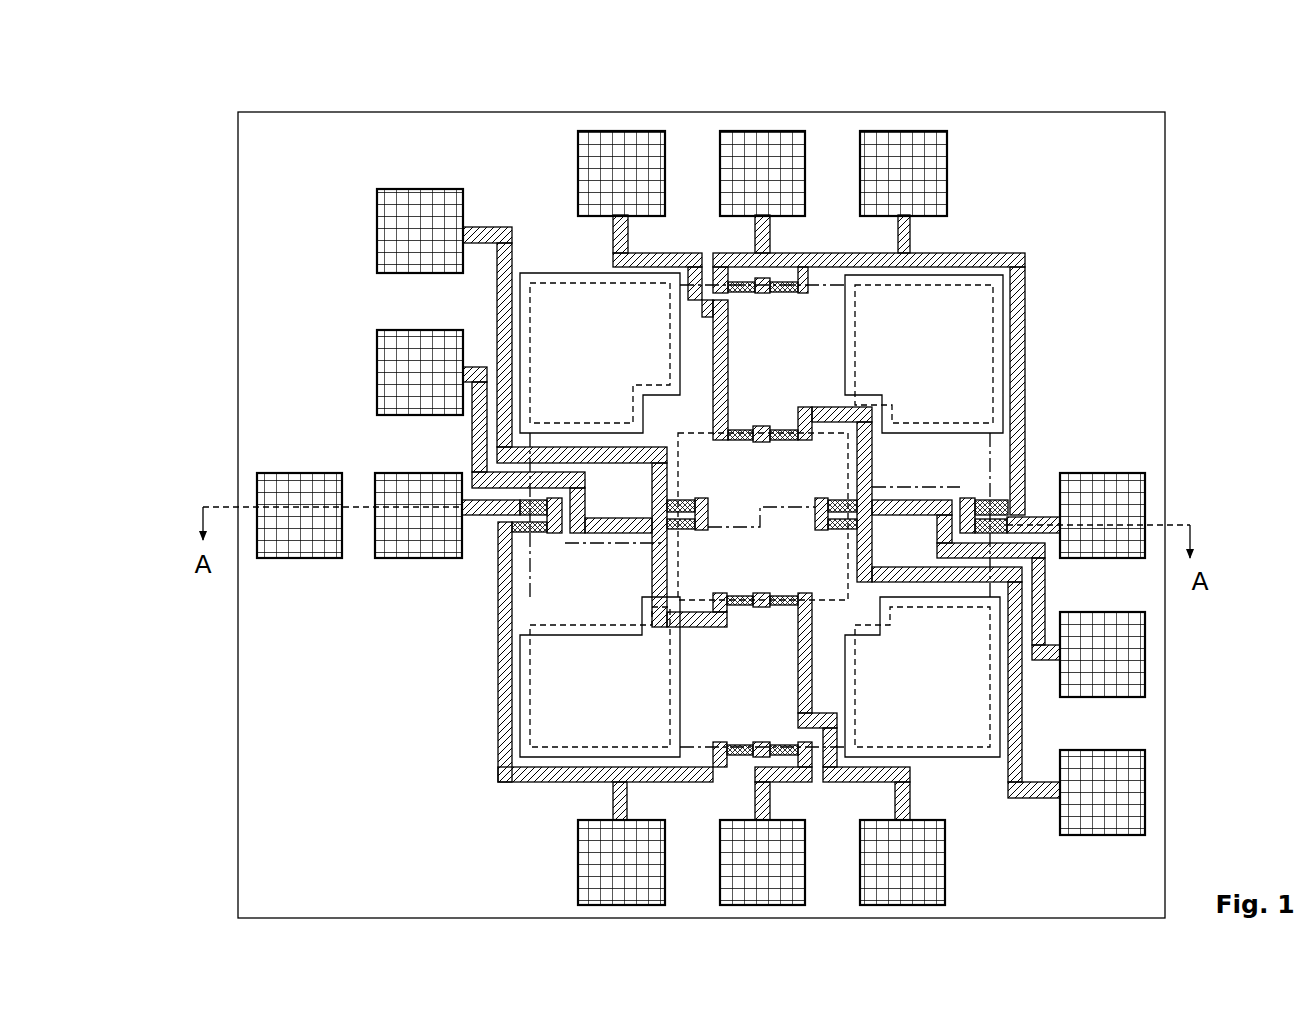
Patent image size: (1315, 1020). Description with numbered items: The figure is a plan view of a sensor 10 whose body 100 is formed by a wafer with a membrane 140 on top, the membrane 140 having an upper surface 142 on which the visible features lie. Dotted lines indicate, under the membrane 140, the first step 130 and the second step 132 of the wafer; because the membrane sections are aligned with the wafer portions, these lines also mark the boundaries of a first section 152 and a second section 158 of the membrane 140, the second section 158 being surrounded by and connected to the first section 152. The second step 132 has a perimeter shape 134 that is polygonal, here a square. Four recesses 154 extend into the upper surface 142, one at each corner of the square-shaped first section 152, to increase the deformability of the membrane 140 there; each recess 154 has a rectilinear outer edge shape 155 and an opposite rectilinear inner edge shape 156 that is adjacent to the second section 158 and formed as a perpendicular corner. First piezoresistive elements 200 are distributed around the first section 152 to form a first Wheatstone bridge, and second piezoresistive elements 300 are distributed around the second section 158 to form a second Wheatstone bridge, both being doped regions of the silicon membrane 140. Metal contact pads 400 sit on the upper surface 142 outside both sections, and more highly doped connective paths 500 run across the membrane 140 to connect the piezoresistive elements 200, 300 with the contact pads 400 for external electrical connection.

The sensor 10 is at (1200, 88).
The body 100 is at (238, 155).
The membrane 140 is at (330, 160).
The upper surface 142 is at (378, 125).
The recesses 154 is at (565, 268).
The first step 130 is at (967, 282).
The connective paths 500 is at (588, 237).
The first piezoresistive elements 200 is at (727, 282).
The second piezoresistive elements 300 is at (770, 428).
The contact pads 400 is at (625, 160).
The first section 152 is at (905, 260).
The outer edge shape 155 is at (1027, 322).
The inner edge shape 156 is at (880, 403).
The second section 158 is at (795, 458).
The second step 132 is at (673, 470).
The perimeter shape 134 is at (695, 427).